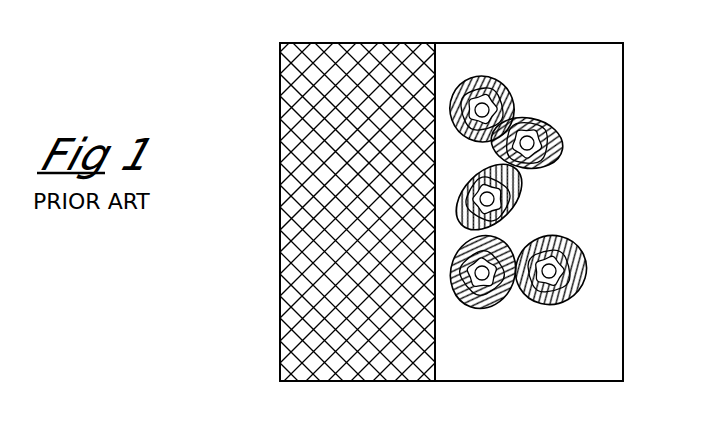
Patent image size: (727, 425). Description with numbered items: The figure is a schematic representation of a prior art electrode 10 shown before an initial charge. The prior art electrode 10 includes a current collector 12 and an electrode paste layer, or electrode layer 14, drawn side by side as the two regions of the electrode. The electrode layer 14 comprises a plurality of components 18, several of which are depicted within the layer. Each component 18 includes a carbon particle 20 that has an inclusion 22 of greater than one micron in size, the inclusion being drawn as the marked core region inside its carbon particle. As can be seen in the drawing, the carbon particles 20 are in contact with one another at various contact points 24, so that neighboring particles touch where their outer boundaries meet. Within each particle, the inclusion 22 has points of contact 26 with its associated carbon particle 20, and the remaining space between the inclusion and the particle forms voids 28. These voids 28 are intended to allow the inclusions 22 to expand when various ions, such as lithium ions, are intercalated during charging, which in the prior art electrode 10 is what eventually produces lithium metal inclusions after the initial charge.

The prior art electrode 10 is at (214, 295).
The current collector 12 is at (280, 241).
The electrode layer 14 is at (626, 105).
The component 18 is at (516, 76).
The carbon particle 20 is at (492, 77).
The inclusion 22 is at (474, 94).
The contact points 24 is at (520, 112).
The points of contact 26 is at (468, 192).
The voids 28 is at (468, 300).